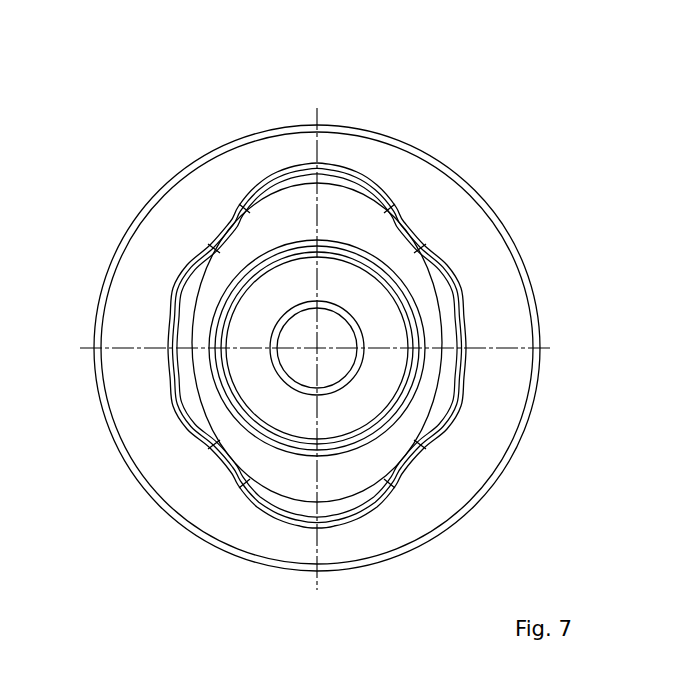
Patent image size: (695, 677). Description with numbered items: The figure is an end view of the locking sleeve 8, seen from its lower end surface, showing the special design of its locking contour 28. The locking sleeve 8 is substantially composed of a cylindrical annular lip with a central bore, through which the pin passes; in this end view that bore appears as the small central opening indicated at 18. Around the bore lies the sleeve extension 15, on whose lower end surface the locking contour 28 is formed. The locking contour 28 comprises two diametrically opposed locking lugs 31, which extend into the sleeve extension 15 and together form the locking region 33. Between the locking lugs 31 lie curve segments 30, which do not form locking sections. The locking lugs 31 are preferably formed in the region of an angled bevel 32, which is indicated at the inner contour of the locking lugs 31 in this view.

The locking sleeve 8 is at (372, 130).
The sleeve extension 15 is at (490, 283).
The shaft 18 is at (300, 388).
The locking contour 28 is at (403, 222).
The curve segment 30 is at (447, 417).
The locking lug 31 is at (252, 203).
The bevel 32 is at (447, 323).
The locking region 33 is at (252, 203).